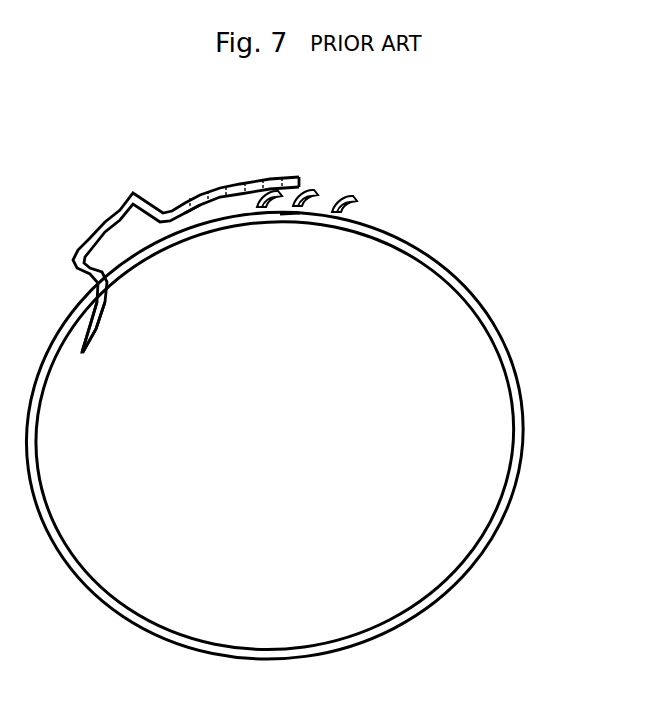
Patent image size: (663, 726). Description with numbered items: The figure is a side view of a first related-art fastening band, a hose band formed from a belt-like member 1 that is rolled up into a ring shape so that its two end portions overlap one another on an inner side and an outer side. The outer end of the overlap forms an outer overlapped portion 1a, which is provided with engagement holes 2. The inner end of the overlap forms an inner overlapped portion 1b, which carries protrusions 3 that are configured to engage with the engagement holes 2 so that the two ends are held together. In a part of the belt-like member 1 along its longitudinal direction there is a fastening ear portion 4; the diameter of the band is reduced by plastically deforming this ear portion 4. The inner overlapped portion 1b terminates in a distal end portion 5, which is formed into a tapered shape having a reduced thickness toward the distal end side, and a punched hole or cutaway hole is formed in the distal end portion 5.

The belt-like member 1 is at (497, 323).
The outer overlapped portion 1a is at (222, 200).
The inner overlapped portion 1b is at (290, 217).
The engagement holes 2 is at (273, 177).
The protrusions 3 is at (349, 198).
The fastening ear portion 4 is at (102, 223).
The distal end portion 5 is at (82, 354).